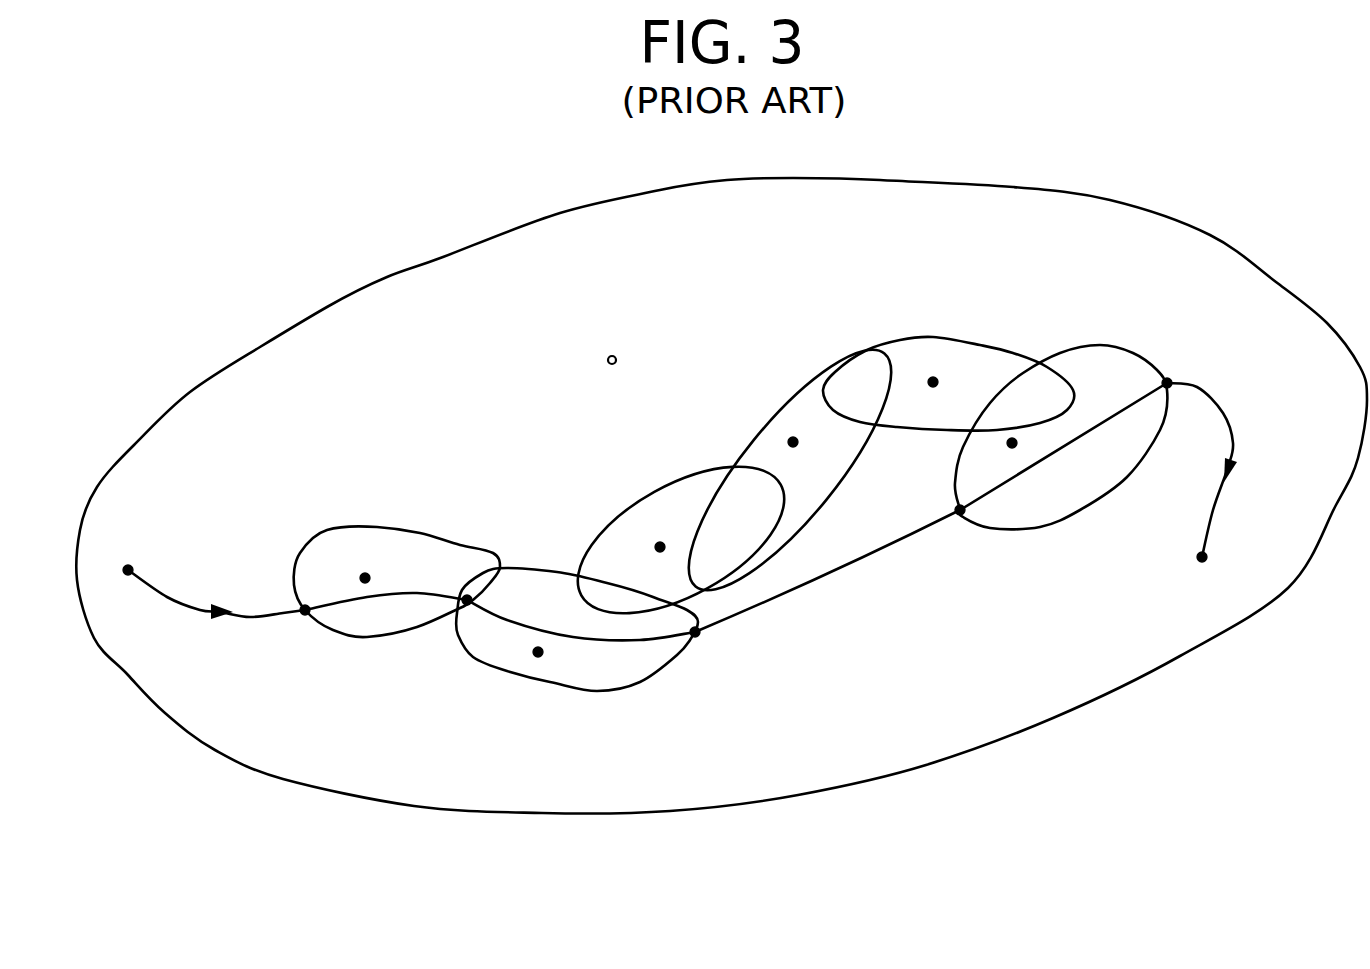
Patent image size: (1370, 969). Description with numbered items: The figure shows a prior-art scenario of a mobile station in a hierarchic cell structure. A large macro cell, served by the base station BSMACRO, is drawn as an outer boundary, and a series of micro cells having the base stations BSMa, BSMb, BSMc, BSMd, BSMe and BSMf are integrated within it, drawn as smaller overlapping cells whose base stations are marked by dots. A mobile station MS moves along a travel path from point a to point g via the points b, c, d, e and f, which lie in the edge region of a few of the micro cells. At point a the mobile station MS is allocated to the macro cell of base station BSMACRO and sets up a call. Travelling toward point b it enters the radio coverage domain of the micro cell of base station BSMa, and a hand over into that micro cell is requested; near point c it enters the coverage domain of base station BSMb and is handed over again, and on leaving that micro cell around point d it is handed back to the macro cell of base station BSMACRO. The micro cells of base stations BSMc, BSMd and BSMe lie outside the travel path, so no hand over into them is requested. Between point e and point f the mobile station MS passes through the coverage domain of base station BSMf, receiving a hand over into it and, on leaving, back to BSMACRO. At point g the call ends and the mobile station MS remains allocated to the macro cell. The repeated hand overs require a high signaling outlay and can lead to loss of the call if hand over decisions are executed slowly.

The base station of the macro cell BSMACRO is at (721, 496).
The micro cell base station BSMa is at (365, 578).
The micro cell base station BSMb is at (538, 652).
The micro cell base station BSMc is at (660, 547).
The micro cell base station BSMd is at (793, 442).
The micro cell base station BSMe is at (933, 382).
The micro cell base station BSMf is at (1012, 443).
The mobile station MS is at (682, 511).
The point a is at (126, 550).
The point b is at (300, 631).
The point c is at (473, 620).
The point d is at (705, 651).
The point e is at (960, 528).
The point f is at (1169, 364).
The point g is at (1205, 572).